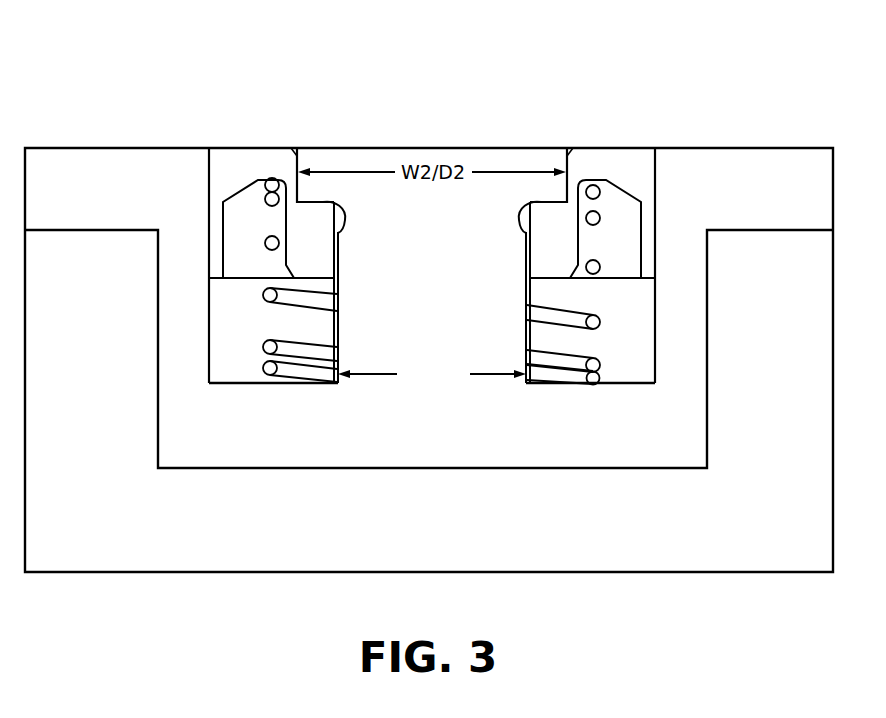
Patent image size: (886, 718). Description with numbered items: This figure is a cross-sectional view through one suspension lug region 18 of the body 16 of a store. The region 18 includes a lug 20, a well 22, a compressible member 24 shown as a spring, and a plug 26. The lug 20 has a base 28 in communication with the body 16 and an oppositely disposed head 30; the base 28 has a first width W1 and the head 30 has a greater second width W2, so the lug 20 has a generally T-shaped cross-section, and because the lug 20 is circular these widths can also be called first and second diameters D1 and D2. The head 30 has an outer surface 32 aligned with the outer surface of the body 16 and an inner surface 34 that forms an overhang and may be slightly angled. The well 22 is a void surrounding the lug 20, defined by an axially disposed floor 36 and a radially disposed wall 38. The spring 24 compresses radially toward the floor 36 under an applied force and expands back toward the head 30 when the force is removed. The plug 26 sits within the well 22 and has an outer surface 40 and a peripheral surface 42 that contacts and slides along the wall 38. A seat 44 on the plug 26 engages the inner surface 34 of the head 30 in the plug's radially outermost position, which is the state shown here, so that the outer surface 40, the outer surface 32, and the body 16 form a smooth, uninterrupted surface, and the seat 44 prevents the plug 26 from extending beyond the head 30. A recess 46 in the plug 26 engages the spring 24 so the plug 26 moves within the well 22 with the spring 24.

The body 16 is at (113, 215).
The suspension lug region 18 is at (150, 86).
The lug 20 is at (409, 96).
The well 22 is at (629, 312).
The compressible member 24 is at (600, 362).
The plug 26 is at (652, 176).
The base 28 is at (487, 380).
The head 30 is at (487, 148).
The outer surface 32 is at (363, 148).
The inner surface 34 is at (560, 203).
The floor 36 is at (237, 377).
The wall 38 is at (209, 303).
The outer surface 40 is at (613, 148).
The peripheral surface 42 is at (228, 160).
The seat 44 is at (320, 205).
The recess 46 is at (627, 248).